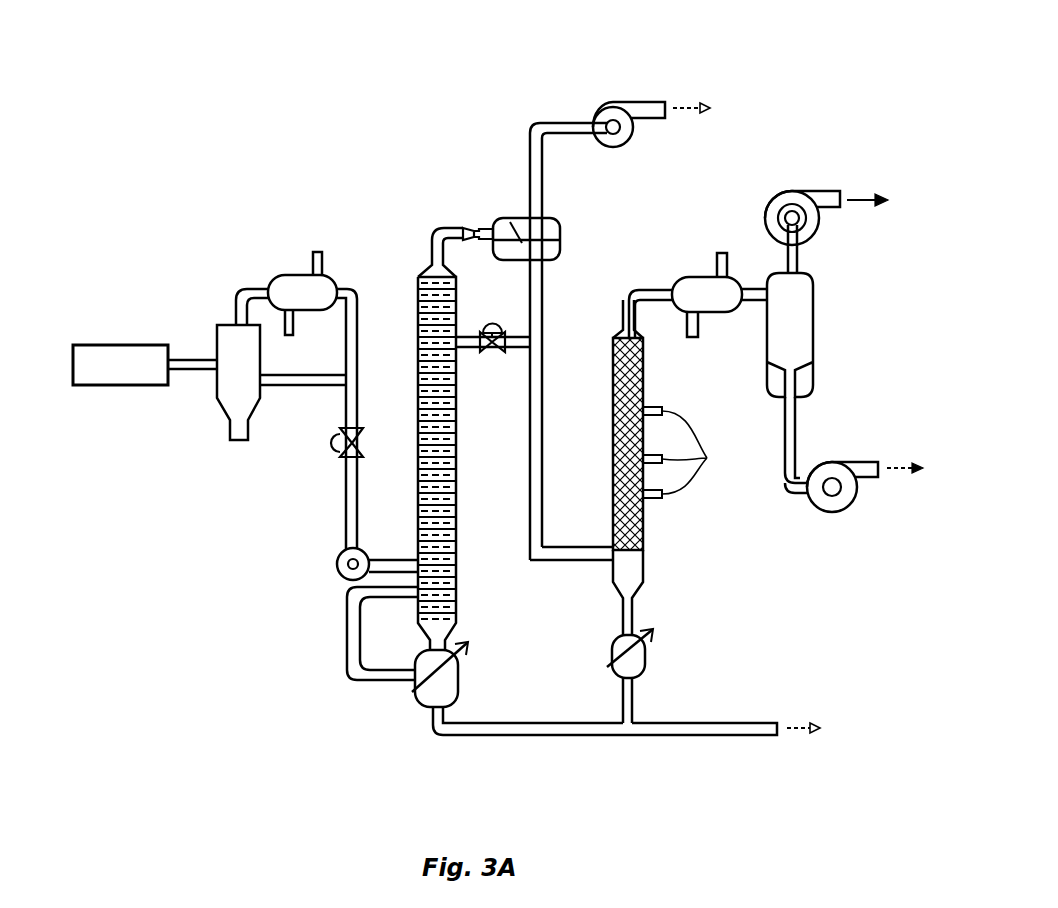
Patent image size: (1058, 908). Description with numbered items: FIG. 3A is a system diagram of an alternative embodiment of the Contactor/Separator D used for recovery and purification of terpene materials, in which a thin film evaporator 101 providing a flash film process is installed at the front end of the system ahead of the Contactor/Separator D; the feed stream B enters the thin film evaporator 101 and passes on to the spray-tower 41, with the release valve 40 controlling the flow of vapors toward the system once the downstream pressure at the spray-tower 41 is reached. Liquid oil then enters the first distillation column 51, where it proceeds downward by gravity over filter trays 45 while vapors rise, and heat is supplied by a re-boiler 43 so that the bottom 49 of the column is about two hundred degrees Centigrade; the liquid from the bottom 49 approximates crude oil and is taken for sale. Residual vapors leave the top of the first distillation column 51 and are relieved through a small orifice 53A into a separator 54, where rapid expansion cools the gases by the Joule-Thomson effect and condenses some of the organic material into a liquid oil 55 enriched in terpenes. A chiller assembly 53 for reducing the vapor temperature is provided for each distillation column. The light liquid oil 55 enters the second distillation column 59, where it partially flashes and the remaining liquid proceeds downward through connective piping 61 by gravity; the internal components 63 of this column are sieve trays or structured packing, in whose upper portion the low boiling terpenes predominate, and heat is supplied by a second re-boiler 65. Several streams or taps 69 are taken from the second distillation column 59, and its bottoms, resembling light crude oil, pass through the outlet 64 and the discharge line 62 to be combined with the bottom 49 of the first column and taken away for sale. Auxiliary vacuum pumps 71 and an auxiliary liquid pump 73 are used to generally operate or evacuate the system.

The thin film evaporator 101 is at (106, 342).
The spray-tower 41 is at (216, 345).
The chiller assembly 53 is at (298, 275).
The release valve 40 is at (333, 448).
The auxiliary liquid pump 73 is at (340, 572).
The first distillation column 51 is at (400, 426).
The filter trays 45 is at (435, 485).
The small orifice 53A is at (477, 226).
The separator 54 is at (536, 200).
The liquid oil 55 is at (510, 222).
The connective piping 61 is at (528, 508).
The auxiliary vacuum pumps 71 is at (632, 145).
The internal components 63 is at (649, 467).
The second distillation column 59 is at (643, 530).
The taps 69 is at (707, 458).
The re-boiler 43 is at (418, 702).
The bottom 49 is at (422, 703).
The second re-boiler 65 is at (675, 716).
The valve outlet 64 is at (638, 678).
The discharge pipe 62 is at (527, 737).
The Contactor/Separator D is at (369, 130).
The feed B is at (57, 360).